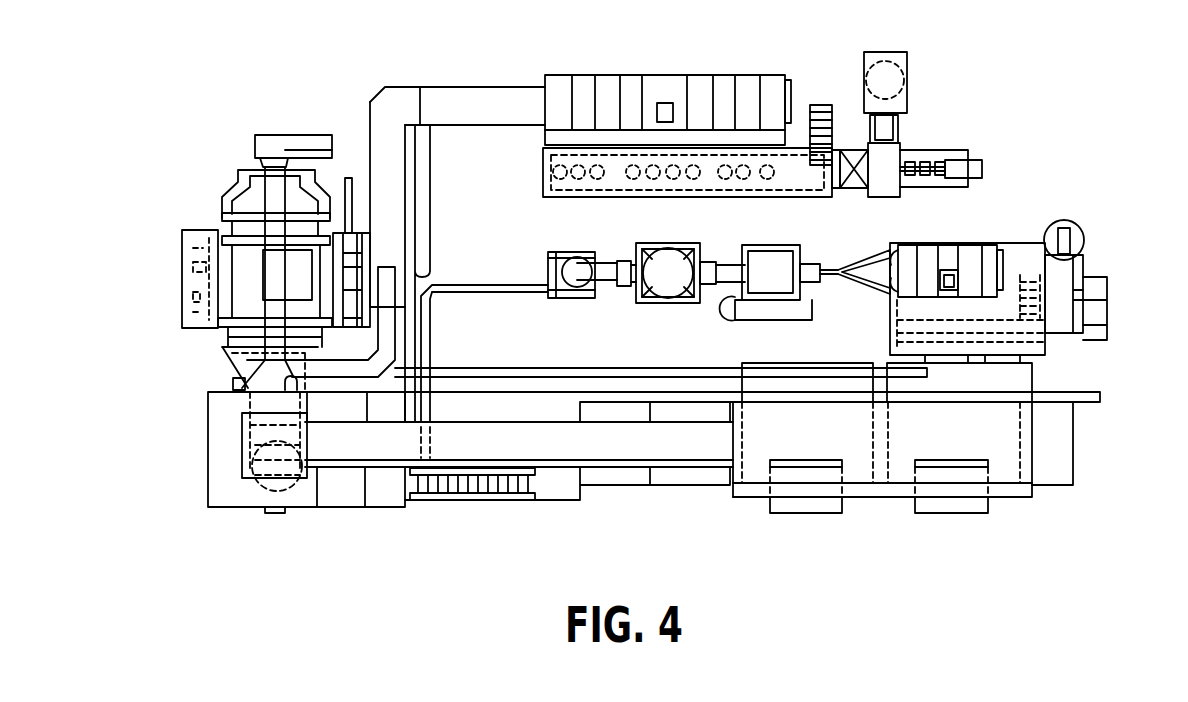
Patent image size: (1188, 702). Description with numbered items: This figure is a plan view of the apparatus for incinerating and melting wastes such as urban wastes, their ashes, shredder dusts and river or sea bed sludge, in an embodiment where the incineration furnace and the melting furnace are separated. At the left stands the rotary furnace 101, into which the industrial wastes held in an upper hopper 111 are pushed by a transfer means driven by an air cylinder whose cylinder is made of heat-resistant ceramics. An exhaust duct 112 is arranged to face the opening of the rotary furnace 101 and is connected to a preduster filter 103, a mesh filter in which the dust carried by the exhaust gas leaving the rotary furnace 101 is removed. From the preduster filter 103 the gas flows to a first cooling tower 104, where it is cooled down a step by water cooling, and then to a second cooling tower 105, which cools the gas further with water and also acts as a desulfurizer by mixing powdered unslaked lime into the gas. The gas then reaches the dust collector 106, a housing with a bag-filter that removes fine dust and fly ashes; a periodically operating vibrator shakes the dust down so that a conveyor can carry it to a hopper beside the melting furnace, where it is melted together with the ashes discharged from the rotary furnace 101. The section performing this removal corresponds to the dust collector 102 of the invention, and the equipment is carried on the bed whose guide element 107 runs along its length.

The rotary furnace 101 is at (249, 147).
The exhaust duct 112 is at (292, 142).
The dust collector 102 is at (654, 469).
The preduster filter 103 is at (564, 290).
The first cooling tower 104 is at (666, 290).
The second cooling tower 105 is at (763, 287).
The dust collector 106 is at (1110, 250).
The guide rail 107 is at (560, 448).
The upper hopper 111 is at (298, 483).